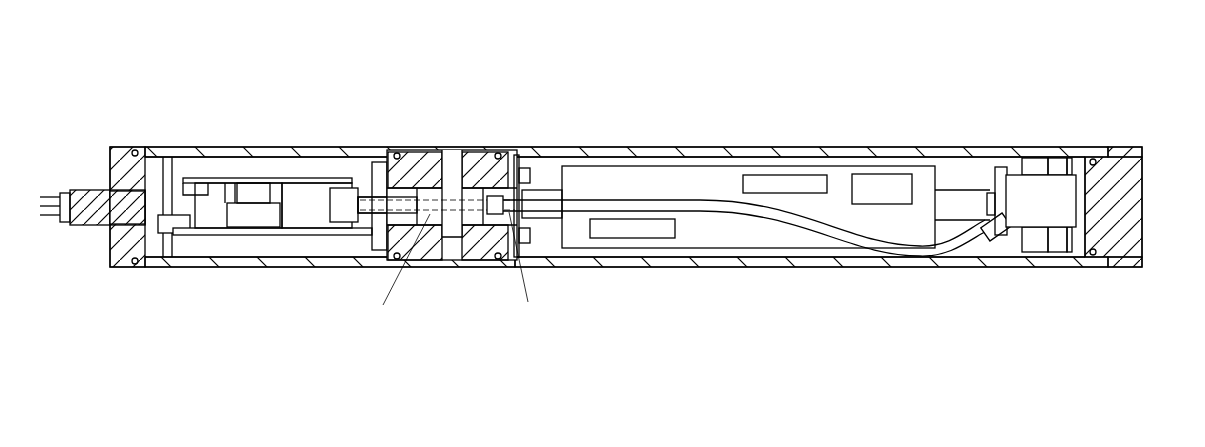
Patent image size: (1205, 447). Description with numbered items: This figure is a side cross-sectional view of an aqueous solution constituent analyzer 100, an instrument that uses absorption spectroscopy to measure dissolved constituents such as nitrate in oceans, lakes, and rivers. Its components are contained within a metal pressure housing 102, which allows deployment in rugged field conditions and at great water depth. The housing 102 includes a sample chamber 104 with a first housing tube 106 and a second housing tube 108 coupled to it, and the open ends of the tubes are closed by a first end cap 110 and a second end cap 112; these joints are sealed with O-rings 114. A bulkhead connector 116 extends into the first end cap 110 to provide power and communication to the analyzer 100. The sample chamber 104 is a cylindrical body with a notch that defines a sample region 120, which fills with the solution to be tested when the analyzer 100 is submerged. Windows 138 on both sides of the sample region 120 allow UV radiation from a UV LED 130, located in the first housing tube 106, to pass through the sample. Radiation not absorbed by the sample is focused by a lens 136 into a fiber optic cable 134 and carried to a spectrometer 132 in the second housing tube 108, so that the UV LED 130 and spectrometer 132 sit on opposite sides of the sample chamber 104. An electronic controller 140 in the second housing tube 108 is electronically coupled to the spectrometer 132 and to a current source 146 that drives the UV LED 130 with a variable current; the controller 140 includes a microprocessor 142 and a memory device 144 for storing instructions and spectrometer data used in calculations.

The aqueous solution constituent analyzer 100 is at (283, 87).
The metal pressure housing 102 is at (626, 208).
The sample chamber 104 is at (444, 253).
The first housing tube 106 is at (291, 269).
The second housing tube 108 is at (921, 269).
The first end cap 110 is at (93, 151).
The second end cap 112 is at (1141, 173).
The O-rings 114 is at (137, 150).
The bulkhead connector 116 is at (100, 228).
The sample region 120 is at (450, 138).
The UV LED 130 is at (342, 196).
The spectrometer 132 is at (1035, 184).
The fiber optic cable 134 is at (589, 199).
The lens 136 is at (538, 158).
The windows 138 is at (447, 212).
The electronic controller 140 is at (776, 210).
The microprocessor 142 is at (889, 185).
The memory device 144 is at (791, 177).
The current source 146 is at (620, 240).